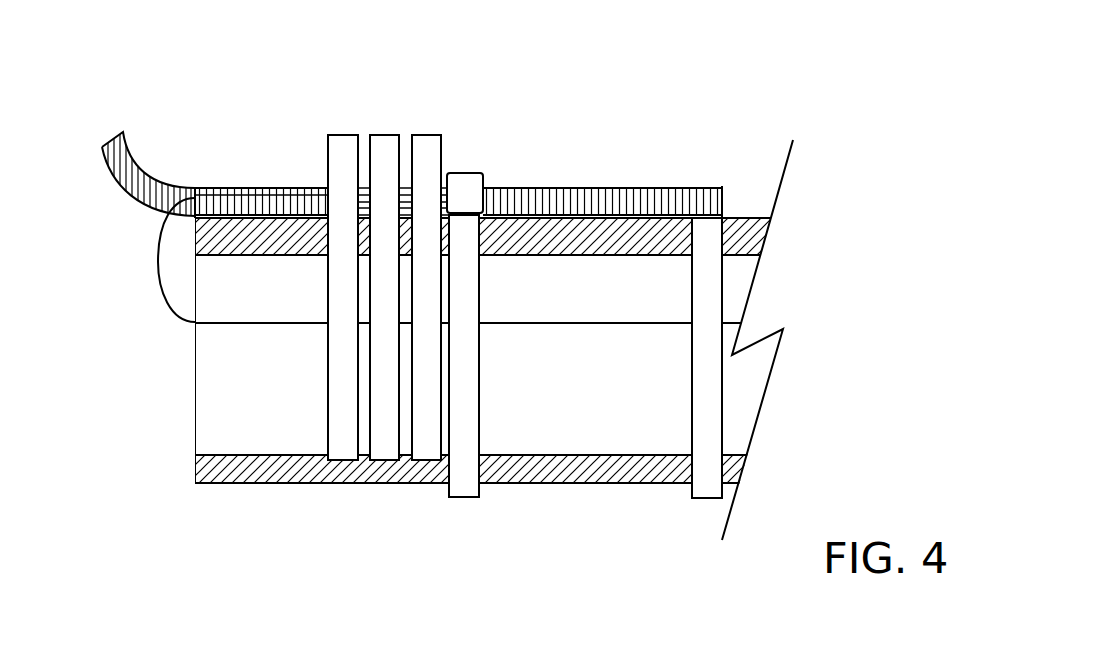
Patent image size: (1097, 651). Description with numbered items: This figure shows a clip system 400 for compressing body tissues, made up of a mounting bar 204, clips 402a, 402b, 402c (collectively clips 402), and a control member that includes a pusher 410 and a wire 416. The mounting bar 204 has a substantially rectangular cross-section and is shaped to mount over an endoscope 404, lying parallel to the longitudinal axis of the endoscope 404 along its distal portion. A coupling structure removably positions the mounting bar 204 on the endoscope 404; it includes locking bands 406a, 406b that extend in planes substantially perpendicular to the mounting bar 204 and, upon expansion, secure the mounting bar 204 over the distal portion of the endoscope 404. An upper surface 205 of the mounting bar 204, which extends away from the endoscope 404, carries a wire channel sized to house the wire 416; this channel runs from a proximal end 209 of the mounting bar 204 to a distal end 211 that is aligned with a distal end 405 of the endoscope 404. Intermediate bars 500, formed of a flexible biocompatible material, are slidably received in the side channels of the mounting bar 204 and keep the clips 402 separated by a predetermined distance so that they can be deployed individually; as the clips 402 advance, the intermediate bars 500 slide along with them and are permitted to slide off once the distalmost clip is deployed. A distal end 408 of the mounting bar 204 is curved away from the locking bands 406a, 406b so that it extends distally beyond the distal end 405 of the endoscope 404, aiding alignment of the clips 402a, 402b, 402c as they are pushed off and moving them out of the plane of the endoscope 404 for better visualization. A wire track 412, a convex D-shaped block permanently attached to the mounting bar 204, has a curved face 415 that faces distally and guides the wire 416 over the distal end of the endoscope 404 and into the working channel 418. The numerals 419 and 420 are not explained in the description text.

The clip system 400 is at (571, 330).
The clips 402 is at (424, 242).
The clip 402a is at (343, 135).
The clip 402b is at (383, 135).
The clip 402c is at (428, 135).
The endoscope 404 is at (398, 483).
The distal end of endoscope 405 is at (193, 483).
The locking band 406a is at (465, 497).
The locking band 406b is at (702, 498).
The distal end of mounting bar 408 is at (105, 145).
The pusher 410 is at (467, 173).
The wire track 412 is at (178, 287).
The curved face 415 is at (141, 277).
The wire 416 is at (160, 257).
The working channel 418 is at (537, 405).
The proximal edge of band 419 is at (197, 188).
The clamp assembly 420 is at (525, 330).
The intermediate bars 500 is at (365, 188).
The mounting bar 204 is at (597, 188).
The upper surface of mounting bar 205 is at (253, 188).
The proximal end of mounting bar 209 is at (722, 186).
The distal end of wire channel 211 is at (193, 185).